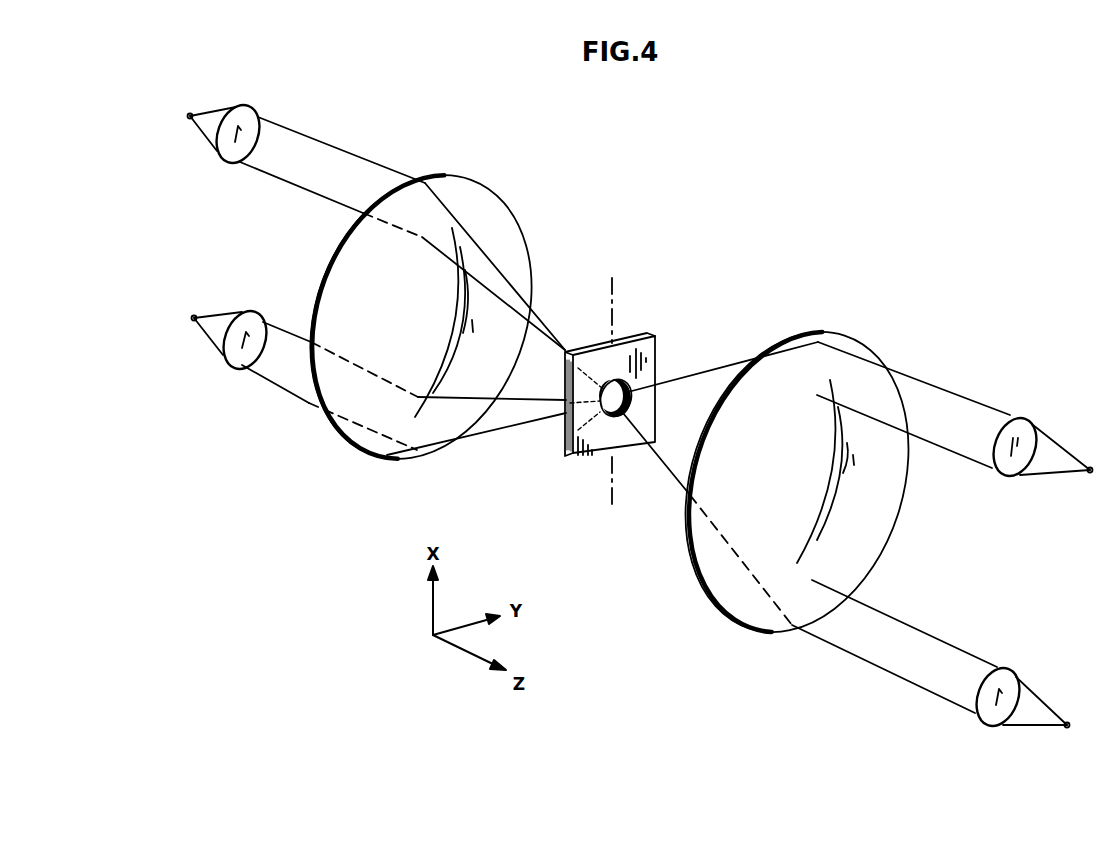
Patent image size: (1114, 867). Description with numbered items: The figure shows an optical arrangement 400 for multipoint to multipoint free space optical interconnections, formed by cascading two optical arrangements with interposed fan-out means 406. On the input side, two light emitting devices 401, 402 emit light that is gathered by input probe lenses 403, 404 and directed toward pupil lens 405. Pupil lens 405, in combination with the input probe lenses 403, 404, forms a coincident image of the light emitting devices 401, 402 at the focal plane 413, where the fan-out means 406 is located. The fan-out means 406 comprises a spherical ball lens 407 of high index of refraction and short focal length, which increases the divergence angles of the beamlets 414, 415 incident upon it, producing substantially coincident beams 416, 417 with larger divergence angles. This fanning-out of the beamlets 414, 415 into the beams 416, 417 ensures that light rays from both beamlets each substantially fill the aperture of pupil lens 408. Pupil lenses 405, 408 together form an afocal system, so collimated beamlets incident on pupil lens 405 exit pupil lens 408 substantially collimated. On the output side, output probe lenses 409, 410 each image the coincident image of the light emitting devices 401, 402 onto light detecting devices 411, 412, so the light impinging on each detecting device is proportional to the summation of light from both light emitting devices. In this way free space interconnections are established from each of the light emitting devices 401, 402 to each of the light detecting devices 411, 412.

The optical arrangement 400 is at (745, 109).
The light emitting device 401 is at (190, 120).
The light emitting device 402 is at (194, 315).
The input probe lens 403 is at (248, 312).
The input probe lens 404 is at (257, 112).
The pupil lens 405 is at (452, 176).
The fan-out means 406 is at (636, 332).
The spherical ball lens 407 is at (565, 455).
The pupil lens 408 is at (851, 332).
The output probe lens 409 is at (1012, 673).
The output probe lens 410 is at (1025, 425).
The light detecting device 411 is at (1090, 478).
The light detecting device 412 is at (1070, 720).
The focal plane 413 is at (613, 508).
The beamlet 414 is at (482, 283).
The beamlet 415 is at (512, 396).
The beam 416 is at (712, 368).
The beam 417 is at (707, 519).